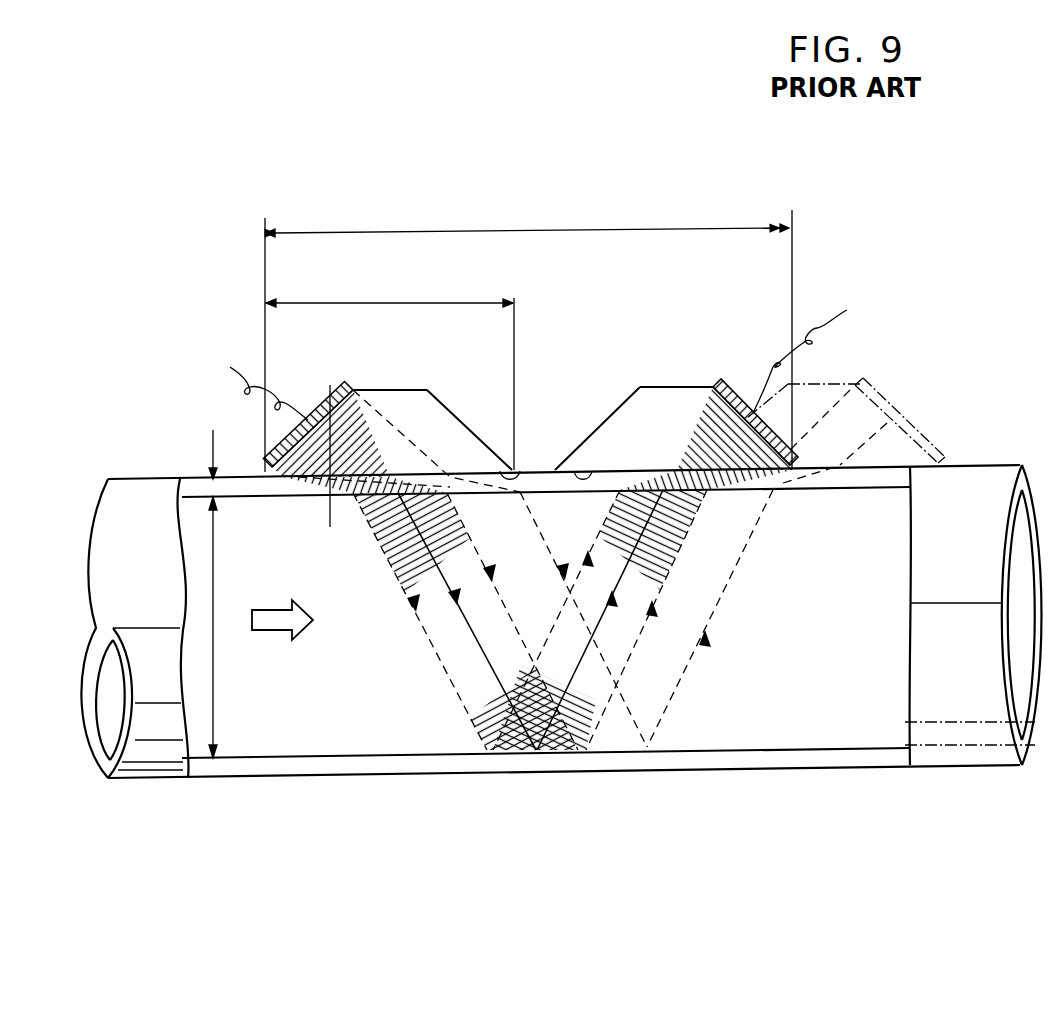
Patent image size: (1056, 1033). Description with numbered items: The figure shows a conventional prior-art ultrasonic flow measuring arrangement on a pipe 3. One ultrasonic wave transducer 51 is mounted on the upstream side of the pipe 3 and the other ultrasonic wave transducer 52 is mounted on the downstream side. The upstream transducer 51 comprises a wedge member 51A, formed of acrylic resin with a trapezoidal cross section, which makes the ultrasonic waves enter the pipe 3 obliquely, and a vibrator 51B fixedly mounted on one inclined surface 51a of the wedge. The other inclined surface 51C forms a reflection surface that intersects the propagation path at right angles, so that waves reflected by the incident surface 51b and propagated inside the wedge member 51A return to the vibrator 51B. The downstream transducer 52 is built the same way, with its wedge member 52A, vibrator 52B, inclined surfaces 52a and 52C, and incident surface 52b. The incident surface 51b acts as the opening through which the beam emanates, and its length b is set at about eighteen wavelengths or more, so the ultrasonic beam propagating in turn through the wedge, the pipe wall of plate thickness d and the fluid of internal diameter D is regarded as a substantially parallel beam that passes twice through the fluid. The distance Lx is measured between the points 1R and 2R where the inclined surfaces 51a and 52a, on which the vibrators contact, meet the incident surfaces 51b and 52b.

The pipe 3 is at (135, 481).
The ultrasonic wave transducer 51 is at (402, 338).
The wedge member 51A is at (389, 388).
The vibrator 51B is at (320, 418).
The inclined surface 51C is at (457, 410).
The inclined surface 51a is at (330, 412).
The incident surface 51b is at (537, 424).
The ultrasonic wave transducer 52 is at (698, 318).
The wedge member 52A is at (650, 388).
The vibrator 52B is at (753, 413).
The inclined surface 52C is at (615, 407).
The inclined surface 52a is at (737, 413).
The incident surface 52b is at (571, 442).
The intersecting point 1R is at (265, 487).
The intersecting point 2R is at (797, 469).
The internal diameter D is at (214, 635).
The plate thickness d is at (210, 484).
The length of incident surface b is at (397, 303).
The distance Lx is at (567, 230).